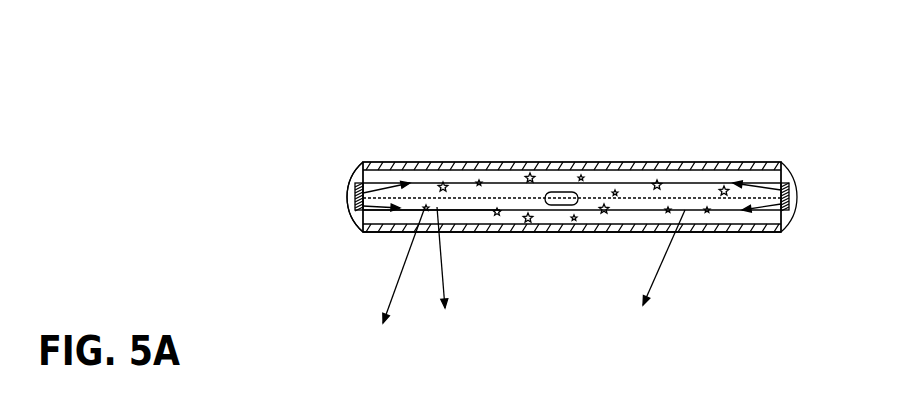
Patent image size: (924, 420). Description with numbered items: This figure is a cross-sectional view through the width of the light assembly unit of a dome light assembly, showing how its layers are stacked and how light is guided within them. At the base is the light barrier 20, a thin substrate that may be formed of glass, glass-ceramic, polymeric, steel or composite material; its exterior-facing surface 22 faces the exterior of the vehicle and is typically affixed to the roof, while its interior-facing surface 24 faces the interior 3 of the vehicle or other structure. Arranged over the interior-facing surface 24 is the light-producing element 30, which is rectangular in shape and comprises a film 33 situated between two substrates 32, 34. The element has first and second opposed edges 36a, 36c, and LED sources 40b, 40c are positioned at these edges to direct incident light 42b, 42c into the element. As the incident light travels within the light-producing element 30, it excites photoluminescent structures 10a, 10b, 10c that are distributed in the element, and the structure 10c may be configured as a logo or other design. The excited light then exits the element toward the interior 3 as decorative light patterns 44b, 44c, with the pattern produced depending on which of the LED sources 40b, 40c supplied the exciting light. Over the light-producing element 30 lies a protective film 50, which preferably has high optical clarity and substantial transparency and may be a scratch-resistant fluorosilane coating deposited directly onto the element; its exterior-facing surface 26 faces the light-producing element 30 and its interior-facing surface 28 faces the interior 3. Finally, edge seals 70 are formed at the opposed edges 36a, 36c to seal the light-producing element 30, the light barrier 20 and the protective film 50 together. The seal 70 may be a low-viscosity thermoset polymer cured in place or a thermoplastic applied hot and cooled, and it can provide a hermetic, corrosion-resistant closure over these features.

The light barrier 20 is at (769, 163).
The exterior-facing surface 22 is at (612, 162).
The interior-facing surface 24 is at (513, 172).
The exterior-facing surface 26 is at (622, 212).
The interior-facing surface 28 is at (588, 236).
The light-producing element 30 is at (745, 172).
The substrate 32 is at (378, 175).
The film 33 is at (468, 200).
The substrate 34 is at (373, 215).
The first edge 36a is at (790, 165).
The second edge 36c is at (352, 178).
The LED source 40b is at (355, 198).
The LED source 40c is at (790, 202).
The incident light 42b is at (366, 190).
The incident light 42c is at (787, 185).
The decorative light pattern 44b is at (408, 243).
The decorative light pattern 44c is at (662, 242).
The protective film 50 is at (774, 231).
The edge seal 70 is at (360, 165).
The photoluminescent structure 10a is at (480, 181).
The photoluminescent structure 10b is at (728, 196).
The photoluminescent structure 10c is at (558, 192).
The interior 3 is at (673, 312).